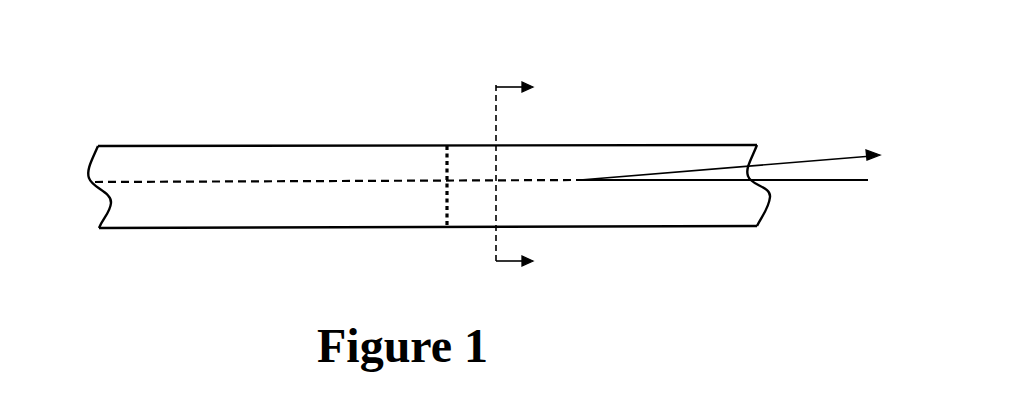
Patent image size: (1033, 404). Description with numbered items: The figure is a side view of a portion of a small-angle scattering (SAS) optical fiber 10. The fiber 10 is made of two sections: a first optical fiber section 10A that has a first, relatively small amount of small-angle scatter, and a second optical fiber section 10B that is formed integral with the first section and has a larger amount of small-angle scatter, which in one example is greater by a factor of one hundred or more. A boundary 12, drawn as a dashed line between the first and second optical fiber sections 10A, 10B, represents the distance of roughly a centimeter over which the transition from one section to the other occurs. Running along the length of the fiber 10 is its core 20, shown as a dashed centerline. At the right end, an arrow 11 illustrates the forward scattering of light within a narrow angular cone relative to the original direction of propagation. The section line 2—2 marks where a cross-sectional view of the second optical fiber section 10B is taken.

The SAS optical fiber 10 is at (210, 101).
The first optical fiber section 10A is at (198, 215).
The second optical fiber section 10B is at (658, 213).
The arrow 11 is at (857, 153).
The boundary 12 is at (445, 146).
The core region 20 is at (285, 192).
The line 2— 2 is at (530, 176).